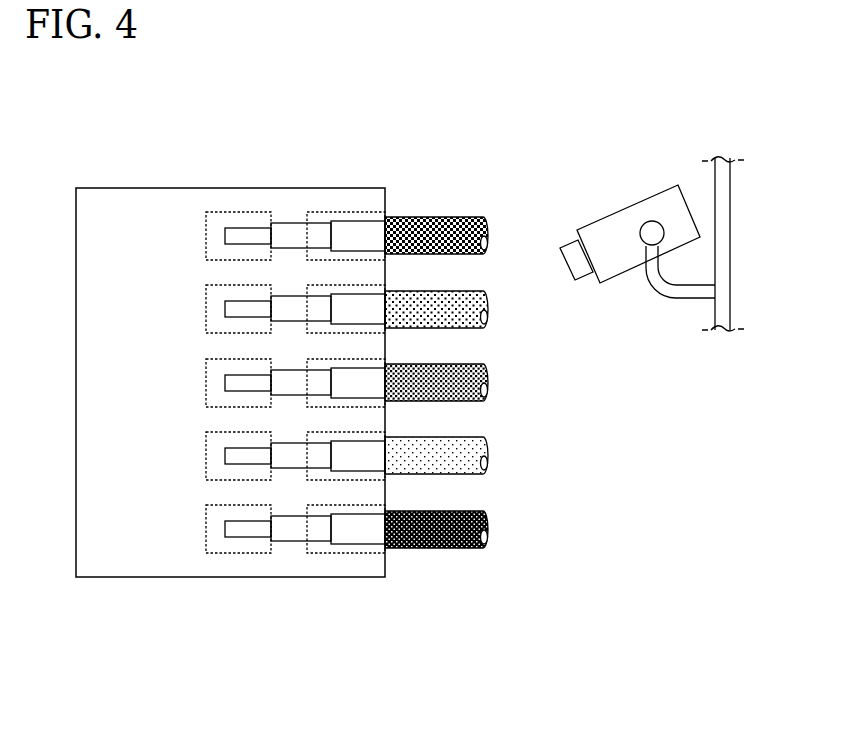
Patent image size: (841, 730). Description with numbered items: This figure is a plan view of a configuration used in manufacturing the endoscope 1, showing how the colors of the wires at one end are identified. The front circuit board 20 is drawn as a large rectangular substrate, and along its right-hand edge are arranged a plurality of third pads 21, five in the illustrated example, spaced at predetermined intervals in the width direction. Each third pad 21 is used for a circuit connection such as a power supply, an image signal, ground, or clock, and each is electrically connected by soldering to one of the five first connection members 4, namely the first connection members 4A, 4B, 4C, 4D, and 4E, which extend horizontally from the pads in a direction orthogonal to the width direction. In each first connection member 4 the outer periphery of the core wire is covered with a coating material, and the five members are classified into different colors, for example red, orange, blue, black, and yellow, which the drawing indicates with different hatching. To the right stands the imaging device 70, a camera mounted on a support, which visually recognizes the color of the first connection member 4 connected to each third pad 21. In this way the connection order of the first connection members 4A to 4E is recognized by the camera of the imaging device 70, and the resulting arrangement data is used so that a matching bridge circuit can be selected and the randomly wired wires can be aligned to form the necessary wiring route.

The endoscope 1 is at (397, 130).
The front circuit board 20 is at (169, 578).
The third pad 21 is at (327, 212).
The first connection member 4 is at (487, 371).
The first connection member 4A is at (468, 217).
The first connection member 4B is at (467, 329).
The first connection member 4C is at (467, 402).
The first connection member 4D is at (467, 475).
The first connection member 4E is at (467, 549).
The imaging device 70 is at (640, 200).